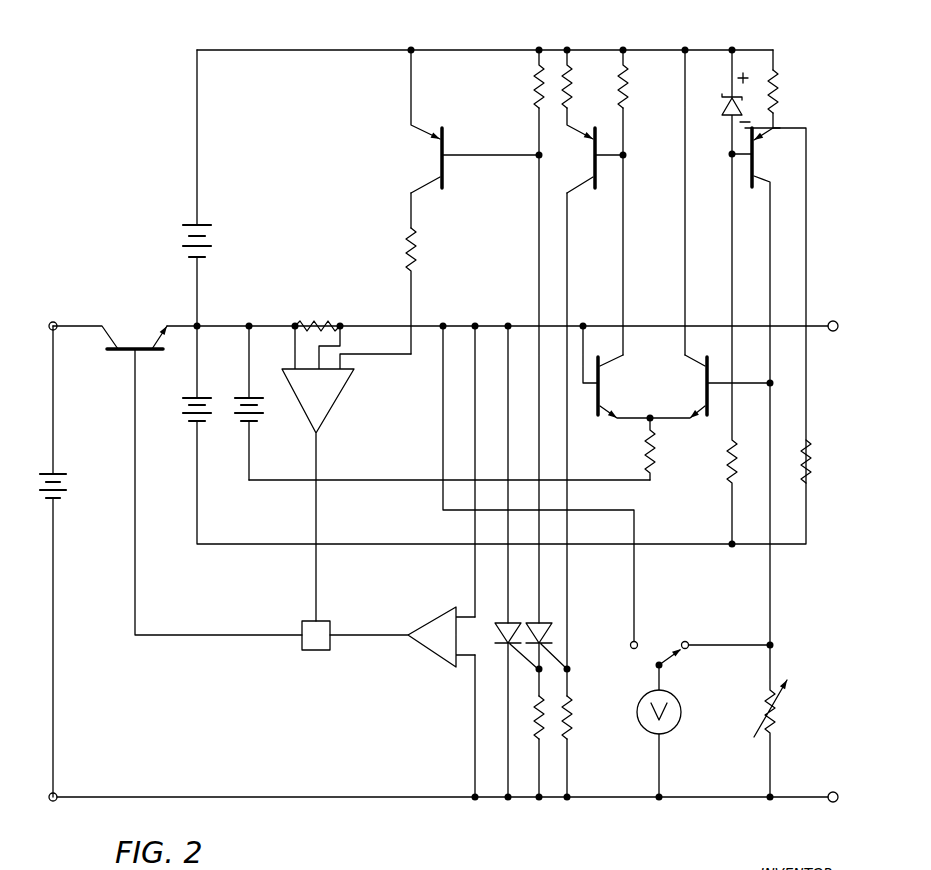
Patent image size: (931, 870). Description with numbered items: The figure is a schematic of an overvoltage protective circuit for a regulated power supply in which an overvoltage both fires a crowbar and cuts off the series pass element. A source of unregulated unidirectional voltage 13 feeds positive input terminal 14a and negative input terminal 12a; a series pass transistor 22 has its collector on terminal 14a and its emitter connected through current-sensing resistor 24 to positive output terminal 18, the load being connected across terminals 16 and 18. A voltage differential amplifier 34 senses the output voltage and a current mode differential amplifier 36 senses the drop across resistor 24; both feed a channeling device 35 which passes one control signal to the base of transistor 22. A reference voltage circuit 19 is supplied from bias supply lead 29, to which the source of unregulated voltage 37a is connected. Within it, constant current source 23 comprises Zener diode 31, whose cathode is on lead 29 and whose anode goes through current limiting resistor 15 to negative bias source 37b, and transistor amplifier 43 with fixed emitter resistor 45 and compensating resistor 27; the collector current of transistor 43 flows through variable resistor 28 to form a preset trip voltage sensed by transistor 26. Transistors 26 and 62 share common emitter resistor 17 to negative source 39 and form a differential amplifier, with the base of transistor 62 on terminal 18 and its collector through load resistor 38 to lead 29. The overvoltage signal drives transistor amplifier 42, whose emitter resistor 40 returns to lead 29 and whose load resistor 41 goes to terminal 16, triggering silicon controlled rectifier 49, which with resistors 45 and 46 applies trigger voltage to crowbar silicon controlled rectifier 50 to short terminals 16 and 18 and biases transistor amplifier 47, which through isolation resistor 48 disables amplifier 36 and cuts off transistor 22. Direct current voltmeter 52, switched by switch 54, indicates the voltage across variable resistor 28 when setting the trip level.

The bias supply lead 29 is at (644, 50).
The positive input terminal 14a is at (55, 321).
The negative input terminal 12a is at (57, 793).
The negative output terminal 16 is at (828, 793).
The positive output terminal 18 is at (838, 324).
The source of unregulated unidirectional voltage 13 is at (60, 482).
The series pass transistor 22 is at (130, 344).
The source of unregulated voltage 37a is at (214, 233).
The source of negative bias voltage 37b is at (183, 407).
The source of negative voltage 39 is at (261, 407).
The current-sensing resistor 24 is at (318, 323).
The current mode differential amplifier 36 is at (336, 407).
The channeling device 35 is at (330, 624).
The voltage differential amplifier 34 is at (447, 625).
The crowbar silicon controlled rectifier 50 is at (502, 623).
The silicon controlled rectifier 49 is at (548, 636).
The emitter resistor 45 is at (780, 87).
The load resistor 41 is at (571, 708).
The resistor 46 is at (535, 91).
The emitter resistor 40 is at (569, 88).
The load resistor 38 is at (622, 92).
The transistor amplifier 47 is at (423, 163).
The transistor amplifier 42 is at (575, 162).
The isolation resistor 48 is at (420, 247).
The Zener diode 31 is at (724, 99).
The transistor amplifier 43 is at (758, 155).
The constant current source 23 is at (785, 113).
The current limiting resistor 15 is at (737, 447).
The compensating resistor 27 is at (812, 456).
The transistor 62 is at (610, 381).
The transistor 26 is at (692, 388).
The common emitter resistor 17 is at (655, 454).
The reference voltage circuit 19 is at (789, 584).
The switch 54 is at (664, 649).
The direct current voltmeter 52 is at (681, 703).
The variable resistor 28 is at (780, 720).